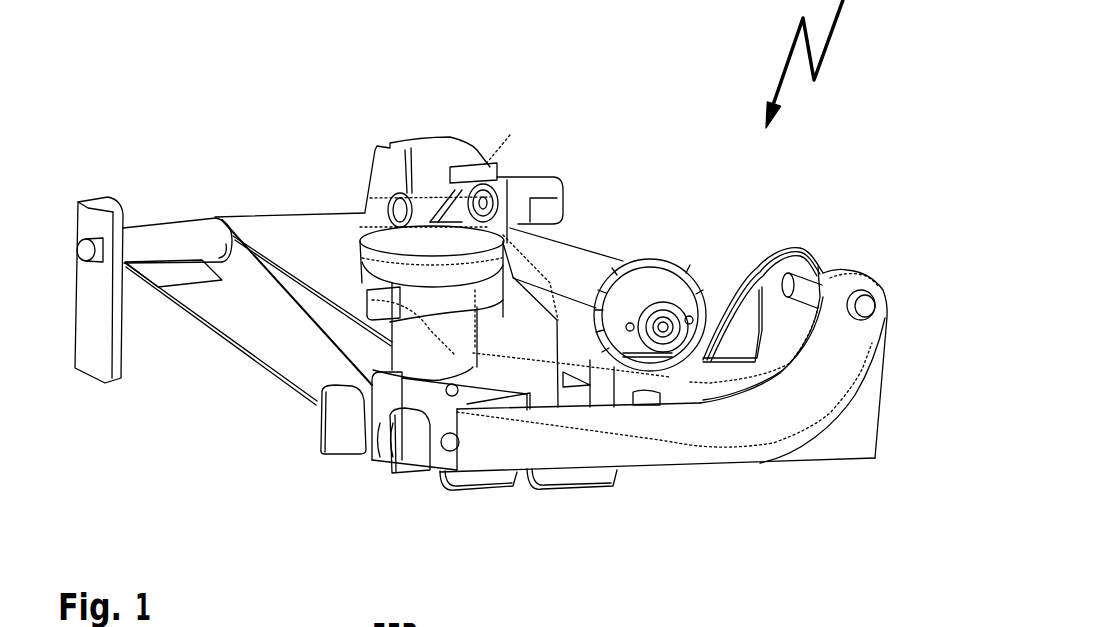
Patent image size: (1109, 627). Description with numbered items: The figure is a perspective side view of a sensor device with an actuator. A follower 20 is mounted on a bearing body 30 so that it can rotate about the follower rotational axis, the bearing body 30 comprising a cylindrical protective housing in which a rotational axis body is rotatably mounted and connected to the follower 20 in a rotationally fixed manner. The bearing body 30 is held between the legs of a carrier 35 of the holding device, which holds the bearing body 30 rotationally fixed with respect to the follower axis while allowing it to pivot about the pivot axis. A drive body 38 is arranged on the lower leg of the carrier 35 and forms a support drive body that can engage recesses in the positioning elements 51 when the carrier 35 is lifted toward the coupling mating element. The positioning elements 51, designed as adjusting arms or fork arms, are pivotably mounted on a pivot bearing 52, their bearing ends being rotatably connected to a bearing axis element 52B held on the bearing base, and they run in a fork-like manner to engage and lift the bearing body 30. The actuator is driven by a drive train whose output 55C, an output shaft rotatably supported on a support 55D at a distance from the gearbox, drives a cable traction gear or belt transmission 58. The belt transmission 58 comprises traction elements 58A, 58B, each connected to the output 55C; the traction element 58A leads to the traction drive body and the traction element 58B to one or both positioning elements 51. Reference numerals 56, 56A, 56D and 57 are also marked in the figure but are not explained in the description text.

The follower 20 is at (494, 238).
The bearing body 30 is at (415, 326).
The carrier 35 is at (362, 449).
The drive body 38 is at (433, 463).
The positioning elements 51 is at (687, 430).
The pivot bearing 52 is at (834, 250).
The bearing axis element 52B is at (877, 287).
The output 55C is at (208, 228).
The support 55D is at (110, 204).
The element 56 is at (826, 626).
The element 56A is at (751, 610).
The element 56D is at (692, 626).
The element 57 is at (616, 626).
The belt transmission 58 is at (253, 340).
The traction element 58A is at (310, 368).
The traction element 58B is at (293, 257).